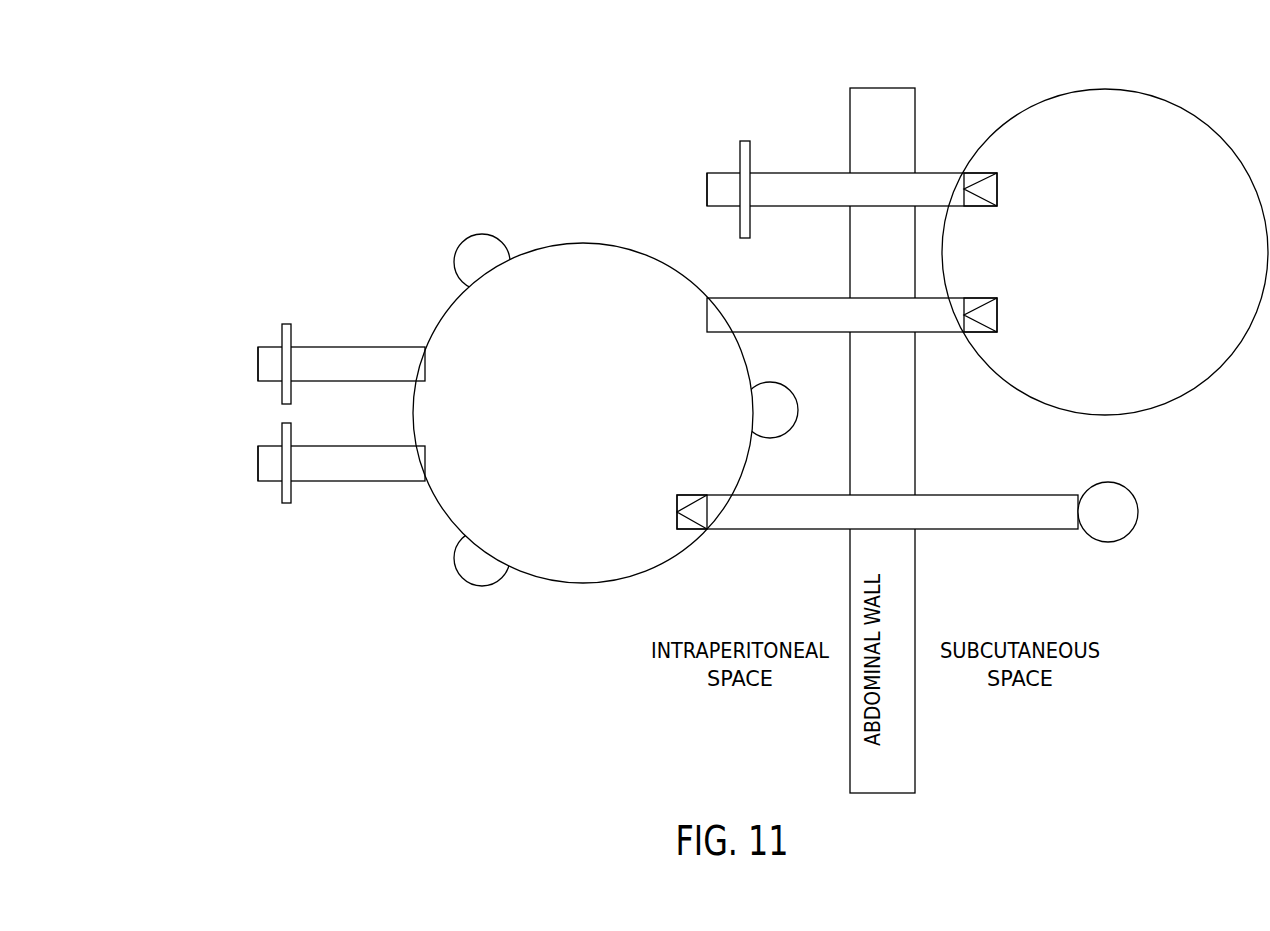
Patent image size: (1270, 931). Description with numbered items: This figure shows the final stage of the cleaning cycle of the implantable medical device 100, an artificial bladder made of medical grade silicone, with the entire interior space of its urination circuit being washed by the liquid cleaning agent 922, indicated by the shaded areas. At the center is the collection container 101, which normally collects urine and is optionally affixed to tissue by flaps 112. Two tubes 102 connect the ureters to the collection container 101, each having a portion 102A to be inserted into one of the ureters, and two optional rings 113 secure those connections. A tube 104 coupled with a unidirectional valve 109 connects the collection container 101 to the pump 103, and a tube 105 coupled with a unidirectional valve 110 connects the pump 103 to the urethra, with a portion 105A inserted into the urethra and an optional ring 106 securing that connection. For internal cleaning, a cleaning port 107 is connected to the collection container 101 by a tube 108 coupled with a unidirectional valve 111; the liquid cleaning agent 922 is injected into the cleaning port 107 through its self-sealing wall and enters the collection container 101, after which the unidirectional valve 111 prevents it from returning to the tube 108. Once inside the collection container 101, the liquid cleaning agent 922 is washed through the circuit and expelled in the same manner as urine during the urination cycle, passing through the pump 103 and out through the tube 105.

The implantable medical device 100 is at (342, 70).
The collection container 101 is at (585, 243).
The tubes 102 is at (345, 347).
The portion 102A is at (265, 347).
The pump 103 is at (1110, 88).
The tube 104 is at (775, 298).
The tube 105 is at (775, 173).
The portion 105A is at (722, 173).
The ring 106 is at (745, 141).
The cleaning port 107 is at (1140, 512).
The tube 108 is at (975, 495).
The unidirectional valve 109 is at (985, 298).
The unidirectional valve 110 is at (985, 206).
The unidirectional valve 111 is at (681, 495).
The flaps 112 is at (463, 245).
The rings 113 is at (290, 324).
The liquid cleaning agent 922 is at (800, 192).